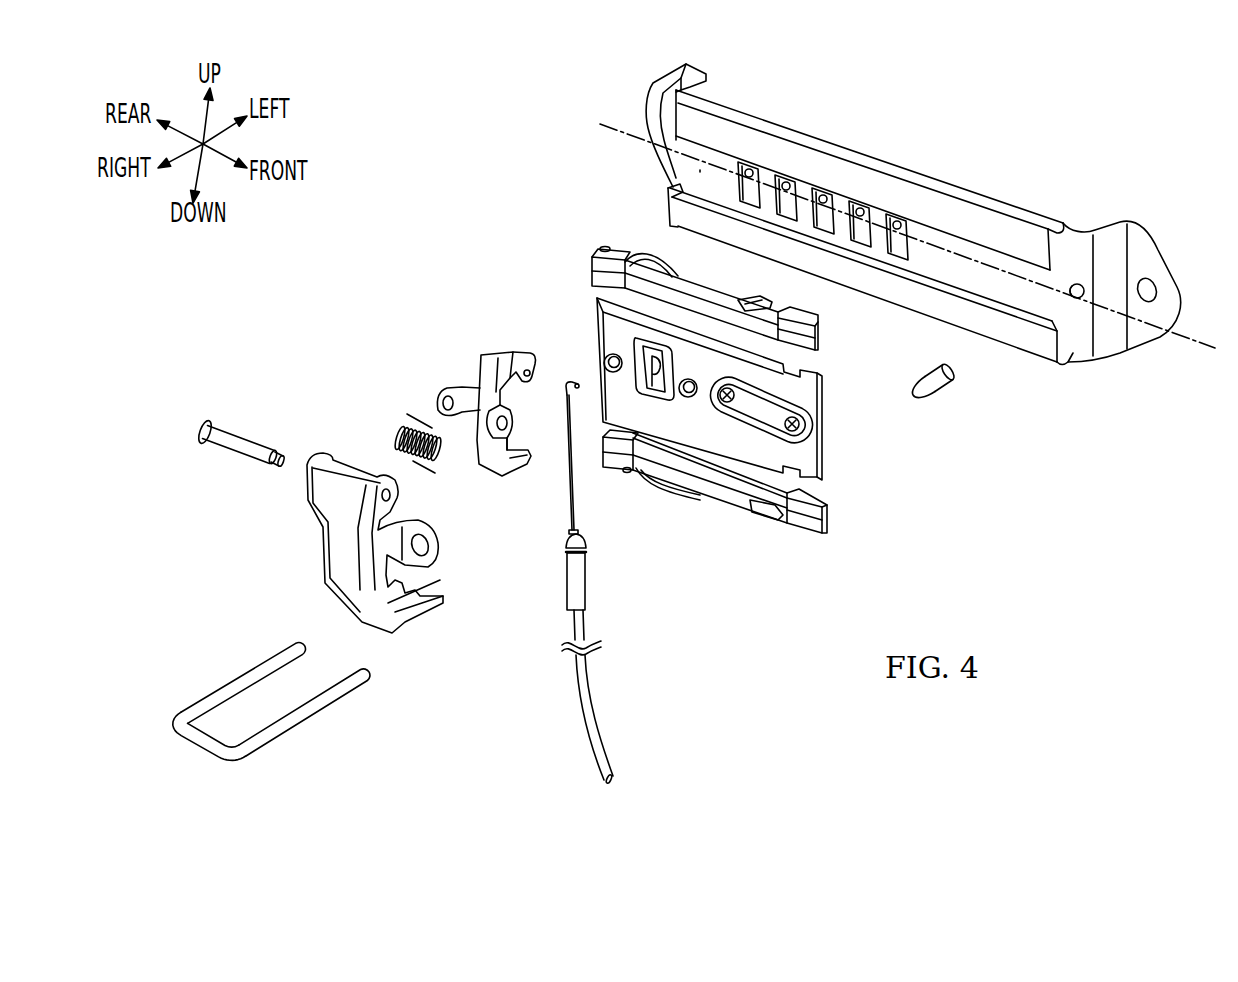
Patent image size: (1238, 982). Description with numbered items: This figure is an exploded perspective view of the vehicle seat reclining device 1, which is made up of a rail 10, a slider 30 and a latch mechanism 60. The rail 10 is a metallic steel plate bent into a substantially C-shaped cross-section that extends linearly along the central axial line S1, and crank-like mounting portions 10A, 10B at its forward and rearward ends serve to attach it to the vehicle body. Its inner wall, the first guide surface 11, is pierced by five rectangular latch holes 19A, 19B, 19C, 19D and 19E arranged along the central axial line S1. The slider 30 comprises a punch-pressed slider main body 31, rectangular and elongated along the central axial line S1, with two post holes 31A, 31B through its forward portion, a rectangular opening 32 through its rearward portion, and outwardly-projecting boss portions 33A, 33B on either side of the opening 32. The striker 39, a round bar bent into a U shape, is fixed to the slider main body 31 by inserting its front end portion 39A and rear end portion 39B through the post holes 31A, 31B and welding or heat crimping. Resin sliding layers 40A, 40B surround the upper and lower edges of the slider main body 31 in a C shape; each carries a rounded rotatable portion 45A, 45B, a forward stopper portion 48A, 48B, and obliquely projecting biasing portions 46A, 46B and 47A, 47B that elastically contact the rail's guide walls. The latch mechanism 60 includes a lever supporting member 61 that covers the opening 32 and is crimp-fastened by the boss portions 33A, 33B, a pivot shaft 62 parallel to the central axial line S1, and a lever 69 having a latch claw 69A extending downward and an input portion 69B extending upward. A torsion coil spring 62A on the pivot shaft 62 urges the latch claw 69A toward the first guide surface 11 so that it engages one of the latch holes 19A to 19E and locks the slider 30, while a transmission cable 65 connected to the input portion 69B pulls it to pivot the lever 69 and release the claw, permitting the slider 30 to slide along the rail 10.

The vehicle seat reclining device 1 is at (444, 198).
The rail 10 is at (749, 96).
The mounting portion 10A is at (1155, 285).
The mounting portion 10B is at (656, 104).
The first guide surface 11 is at (705, 172).
The latch hole 19A is at (900, 215).
The latch hole 19B is at (862, 205).
The latch hole 19C is at (818, 190).
The latch hole 19D is at (788, 176).
The latch hole 19E is at (750, 163).
The central axial line S1 is at (917, 241).
The slider 30 is at (520, 263).
The slider main body 31 is at (818, 447).
The post hole 31A is at (797, 423).
The post hole 31B is at (736, 393).
The rectangular opening 32 is at (640, 348).
The boss portion 33A is at (606, 352).
The boss portion 33B is at (680, 383).
The sliding layer 40A is at (842, 348).
The sliding layer 40B is at (845, 513).
The rotatable portion 45A is at (652, 254).
The rotatable portion 45B is at (660, 485).
The biasing portion 46A is at (762, 300).
The biasing portion 46B is at (772, 518).
The biasing portion 47A is at (608, 250).
The biasing portion 47B is at (627, 471).
The stopper portion 48A is at (815, 316).
The stopper portion 48B is at (812, 532).
The latch mechanism 60 is at (355, 348).
The lever supporting member 61 is at (340, 570).
The pivot shaft 62 is at (242, 443).
The torsion coil spring 62A is at (398, 438).
The lever 69 is at (477, 397).
The latch claw 69A is at (531, 449).
The input portion 69B is at (520, 350).
The striker 39 is at (184, 757).
The front end portion 39A is at (348, 685).
The rear end portion 39B is at (282, 663).
The transmission cable 65 is at (582, 682).